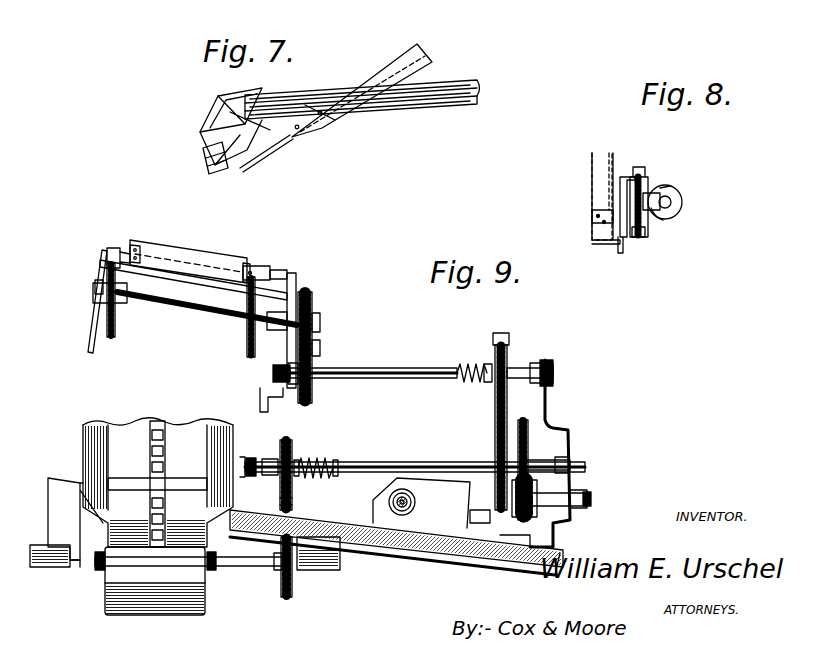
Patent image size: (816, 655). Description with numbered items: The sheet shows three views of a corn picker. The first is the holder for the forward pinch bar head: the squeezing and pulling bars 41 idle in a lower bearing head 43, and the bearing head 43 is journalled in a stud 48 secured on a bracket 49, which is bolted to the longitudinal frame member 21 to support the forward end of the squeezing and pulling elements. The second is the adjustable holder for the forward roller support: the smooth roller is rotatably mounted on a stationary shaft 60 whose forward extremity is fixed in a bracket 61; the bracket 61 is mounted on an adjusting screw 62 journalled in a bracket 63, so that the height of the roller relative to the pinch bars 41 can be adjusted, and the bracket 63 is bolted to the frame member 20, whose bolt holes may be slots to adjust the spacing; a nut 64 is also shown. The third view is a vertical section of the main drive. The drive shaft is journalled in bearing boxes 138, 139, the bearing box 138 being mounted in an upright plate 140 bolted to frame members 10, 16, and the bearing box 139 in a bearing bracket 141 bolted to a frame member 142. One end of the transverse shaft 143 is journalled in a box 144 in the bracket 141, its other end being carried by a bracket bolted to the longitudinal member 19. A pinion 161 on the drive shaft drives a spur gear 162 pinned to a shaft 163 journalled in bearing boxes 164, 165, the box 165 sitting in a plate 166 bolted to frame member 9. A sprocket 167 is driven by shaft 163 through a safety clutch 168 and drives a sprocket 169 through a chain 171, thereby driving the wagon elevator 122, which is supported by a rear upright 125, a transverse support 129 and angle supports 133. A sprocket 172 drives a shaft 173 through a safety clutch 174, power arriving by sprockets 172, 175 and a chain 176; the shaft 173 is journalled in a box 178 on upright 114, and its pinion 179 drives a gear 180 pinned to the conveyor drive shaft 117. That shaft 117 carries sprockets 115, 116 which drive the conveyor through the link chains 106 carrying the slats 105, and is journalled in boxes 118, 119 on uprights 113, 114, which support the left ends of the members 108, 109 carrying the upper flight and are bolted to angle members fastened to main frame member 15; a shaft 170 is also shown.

In FIG. 7, the longitudinal frame member 21 is at (370, 74).
In FIG. 7, the squeezing and pulling bars 41 is at (462, 82).
In FIG. 8, the squeezing and pulling bars 41 is at (670, 191).
In FIG. 7, the bearing head 43 is at (206, 112).
In FIG. 7, the stud 48 is at (204, 152).
In FIG. 7, the bracket 49 is at (280, 145).
In FIG. 8, the frame member 20 is at (597, 178).
In FIG. 8, the stationary shaft 60 is at (680, 202).
In FIG. 8, the bracket 61 is at (663, 217).
In FIG. 8, the adjusting screw 62 is at (641, 168).
In FIG. 8, the bracket 63 is at (620, 245).
In FIG. 8, the nut 64 is at (643, 232).
In FIG. 9, the main frame member 9 is at (247, 522).
In FIG. 9, the main frame member 10 is at (570, 520).
In FIG. 9, the main frame member 15 is at (272, 404).
In FIG. 9, the frame member 16 is at (565, 427).
In FIG. 9, the longitudinal member 19 is at (450, 550).
In FIG. 9, the slats 105 is at (212, 250).
In FIG. 9, the link chains 106 is at (263, 275).
In FIG. 9, the member 108 is at (112, 238).
In FIG. 9, the member 109 is at (277, 272).
In FIG. 9, the upright 113 is at (93, 338).
In FIG. 9, the upright 114 is at (283, 350).
In FIG. 9, the sprocket 115 is at (112, 328).
In FIG. 9, the sprocket 116 is at (247, 342).
In FIG. 9, the shaft 117 is at (182, 308).
In FIG. 9, the box 118 is at (95, 285).
In FIG. 9, the box 119 is at (300, 298).
In FIG. 9, the wagon elevator 122 is at (97, 427).
In FIG. 9, the rear upright 125 is at (53, 513).
In FIG. 9, the transverse support 129 is at (40, 567).
In FIG. 9, the angle supports 133 is at (80, 567).
In FIG. 9, the bearing box 138 is at (587, 497).
In FIG. 9, the bearing box 139 is at (490, 510).
In FIG. 9, the upright plate 140 is at (570, 480).
In FIG. 9, the bearing bracket 141 is at (458, 540).
In FIG. 9, the frame member 142 is at (520, 562).
In FIG. 9, the transverse shaft 143 is at (400, 513).
In FIG. 9, the box 144 is at (417, 502).
In FIG. 9, the pinion 161 is at (553, 523).
In FIG. 9, the spur gear 162 is at (525, 422).
In FIG. 9, the shaft 163 is at (432, 462).
In FIG. 9, the bearing box 164 is at (572, 463).
In FIG. 9, the bearing box 165 is at (250, 460).
In FIG. 9, the plate 166 is at (250, 462).
In FIG. 9, the sprocket 167 is at (290, 441).
In FIG. 9, the safety clutch 168 is at (305, 455).
In FIG. 9, the sprocket 169 is at (280, 587).
In FIG. 9, the shaft 170 is at (232, 568).
In FIG. 9, the chain 171 is at (295, 500).
In FIG. 9, the sprocket 172 is at (510, 367).
In FIG. 9, the shaft 173 is at (400, 367).
In FIG. 9, the safety clutch 174 is at (483, 350).
In FIG. 9, the sprocket 175 is at (503, 437).
In FIG. 9, the chain 176 is at (497, 400).
In FIG. 9, the box 178 is at (277, 375).
In FIG. 9, the pinion 179 is at (313, 347).
In FIG. 9, the gear 180 is at (318, 302).